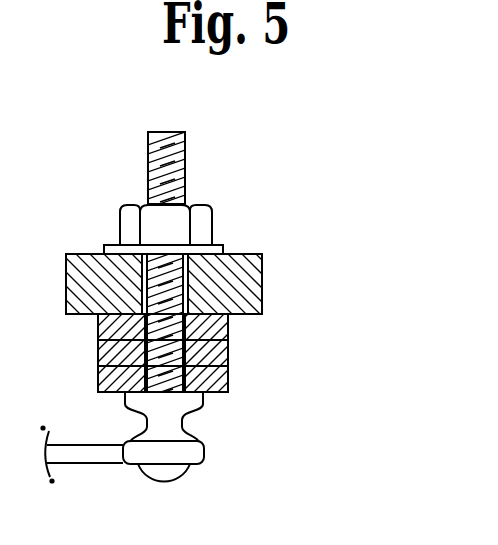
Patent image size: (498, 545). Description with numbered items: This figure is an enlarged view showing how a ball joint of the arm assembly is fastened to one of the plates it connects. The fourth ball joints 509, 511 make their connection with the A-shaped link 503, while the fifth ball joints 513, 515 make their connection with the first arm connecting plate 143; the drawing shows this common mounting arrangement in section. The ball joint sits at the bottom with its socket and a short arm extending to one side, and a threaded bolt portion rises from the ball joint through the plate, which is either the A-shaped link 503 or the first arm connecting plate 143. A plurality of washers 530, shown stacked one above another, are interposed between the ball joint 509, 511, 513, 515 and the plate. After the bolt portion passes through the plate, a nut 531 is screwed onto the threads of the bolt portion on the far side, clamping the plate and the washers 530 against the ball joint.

The nut 531 is at (208, 220).
The first arm connecting plate 143 is at (243, 285).
The A-shaped arm link 503 is at (262, 280).
The washer 530 is at (228, 333).
The fourth ball joint 509 is at (249, 458).
The fourth ball joint 511 is at (249, 458).
The fifth ball joint 513 is at (249, 458).
The fifth ball joint 515 is at (237, 447).